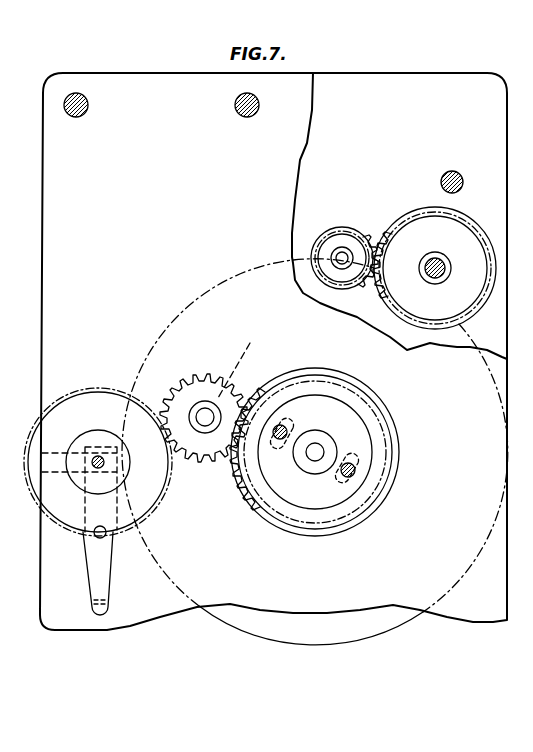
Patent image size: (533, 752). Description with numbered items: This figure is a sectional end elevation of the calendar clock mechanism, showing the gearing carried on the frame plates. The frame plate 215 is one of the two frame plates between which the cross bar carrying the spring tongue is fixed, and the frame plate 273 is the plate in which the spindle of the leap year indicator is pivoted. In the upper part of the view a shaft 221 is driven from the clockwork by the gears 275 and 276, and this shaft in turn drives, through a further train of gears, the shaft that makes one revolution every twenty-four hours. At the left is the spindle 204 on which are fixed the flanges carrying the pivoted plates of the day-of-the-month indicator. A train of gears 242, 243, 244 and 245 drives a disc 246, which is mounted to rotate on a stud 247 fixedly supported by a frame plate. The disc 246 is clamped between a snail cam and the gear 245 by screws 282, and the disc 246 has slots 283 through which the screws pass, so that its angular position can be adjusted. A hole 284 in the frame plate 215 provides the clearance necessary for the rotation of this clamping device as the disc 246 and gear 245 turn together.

The spindle 204 is at (96, 456).
The frame plate 215 is at (150, 608).
The shaft 221 is at (443, 262).
The gear 242 is at (155, 483).
The gear 243 is at (200, 400).
The gear 244 is at (248, 360).
The gear 245 is at (283, 507).
The disc 246 is at (380, 620).
The stud 247 is at (318, 450).
The frame plate 273 is at (395, 95).
The gear 275 is at (335, 230).
The gear 276 is at (393, 228).
The screws 282 is at (355, 470).
The slots 283 is at (360, 457).
The hole 284 is at (373, 510).